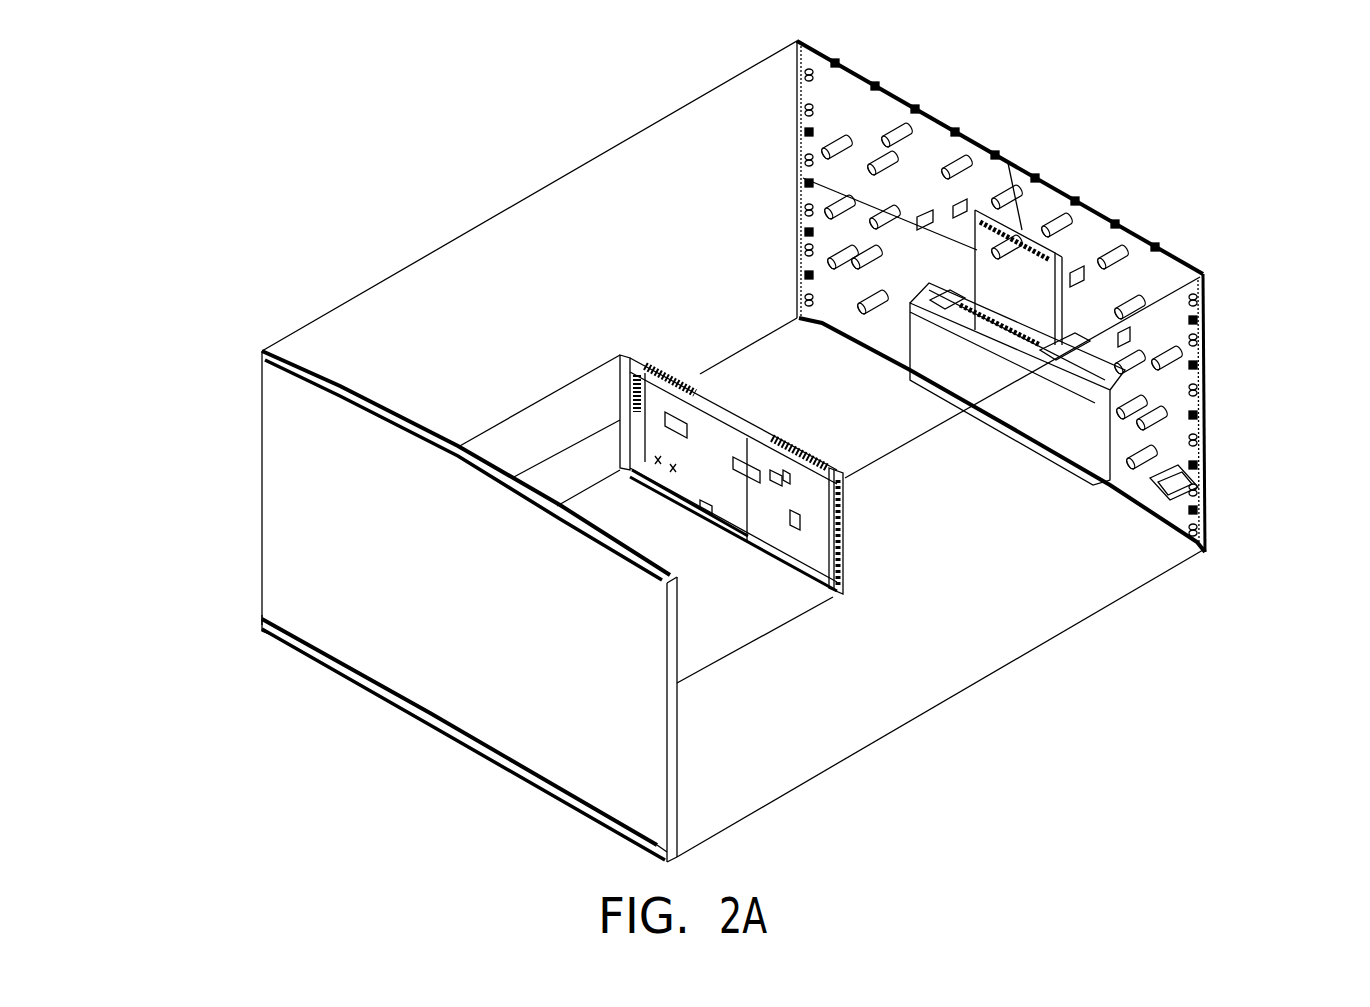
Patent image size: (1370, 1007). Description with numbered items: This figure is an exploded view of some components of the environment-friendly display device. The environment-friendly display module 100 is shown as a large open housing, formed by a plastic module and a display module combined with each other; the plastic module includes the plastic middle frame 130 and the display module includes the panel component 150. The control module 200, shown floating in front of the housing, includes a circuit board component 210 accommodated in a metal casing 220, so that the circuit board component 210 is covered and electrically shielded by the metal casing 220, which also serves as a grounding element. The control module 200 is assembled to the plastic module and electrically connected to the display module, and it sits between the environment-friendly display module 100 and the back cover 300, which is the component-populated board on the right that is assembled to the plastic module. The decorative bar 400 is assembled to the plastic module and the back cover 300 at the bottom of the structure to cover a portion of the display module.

The environment-friendly display module 100 is at (188, 468).
The panel component 150 is at (287, 578).
The plastic middle frame 130 is at (677, 754).
The decorative bar 400 is at (460, 746).
The control module 200 is at (661, 318).
The circuit board component 210 is at (783, 475).
The metal casing 220 is at (847, 525).
The back cover 300 is at (1205, 398).